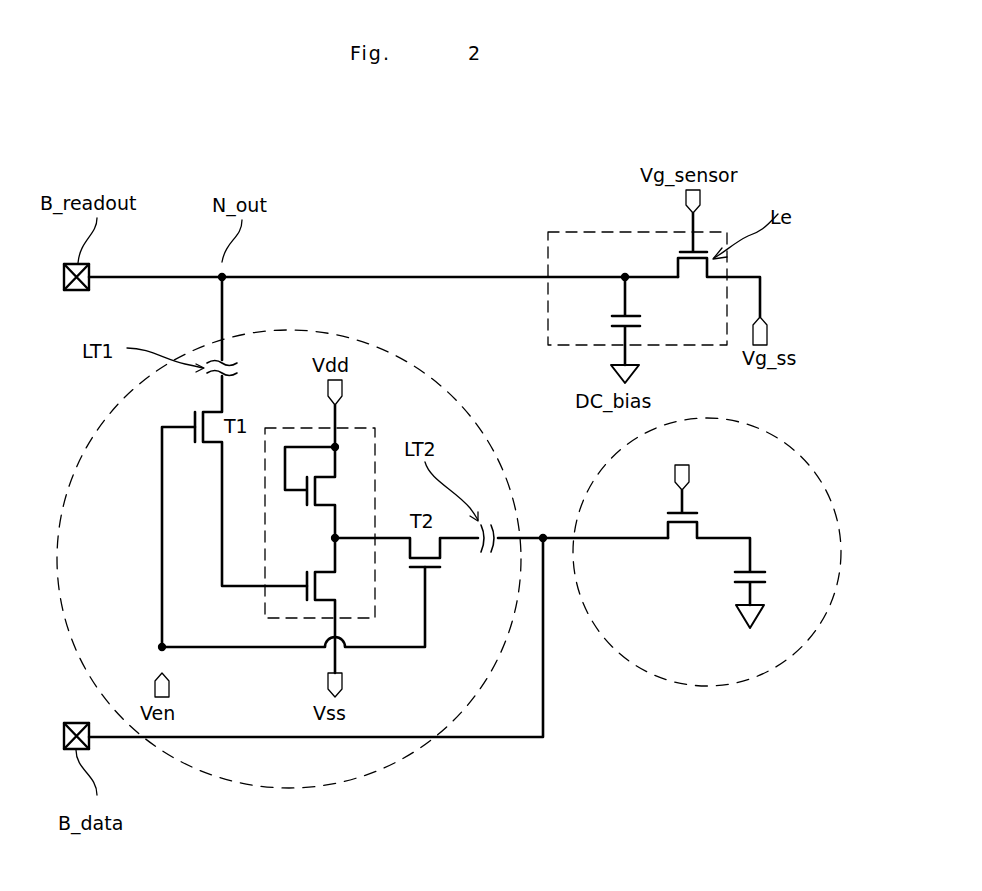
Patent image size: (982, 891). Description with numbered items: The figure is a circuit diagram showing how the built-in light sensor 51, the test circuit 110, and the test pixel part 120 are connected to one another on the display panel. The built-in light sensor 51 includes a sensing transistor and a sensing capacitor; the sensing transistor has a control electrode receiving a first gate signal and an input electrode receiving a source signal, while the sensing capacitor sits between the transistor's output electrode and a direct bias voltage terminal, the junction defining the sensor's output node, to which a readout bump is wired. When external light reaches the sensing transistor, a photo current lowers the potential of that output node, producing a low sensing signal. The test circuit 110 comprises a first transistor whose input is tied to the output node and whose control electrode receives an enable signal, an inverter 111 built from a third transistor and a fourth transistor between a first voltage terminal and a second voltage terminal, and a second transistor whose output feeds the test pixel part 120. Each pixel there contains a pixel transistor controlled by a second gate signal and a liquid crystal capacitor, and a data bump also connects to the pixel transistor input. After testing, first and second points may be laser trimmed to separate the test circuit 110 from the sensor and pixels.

The built-in light sensor 51 is at (595, 231).
The test circuit 110 is at (300, 789).
The inverter 111 is at (290, 428).
The test pixel part 120 is at (786, 432).